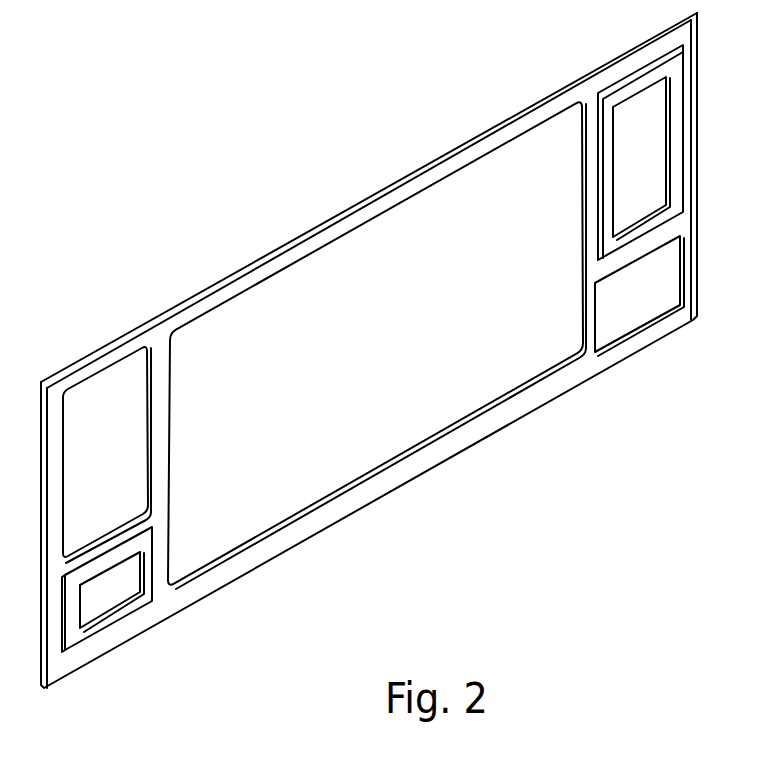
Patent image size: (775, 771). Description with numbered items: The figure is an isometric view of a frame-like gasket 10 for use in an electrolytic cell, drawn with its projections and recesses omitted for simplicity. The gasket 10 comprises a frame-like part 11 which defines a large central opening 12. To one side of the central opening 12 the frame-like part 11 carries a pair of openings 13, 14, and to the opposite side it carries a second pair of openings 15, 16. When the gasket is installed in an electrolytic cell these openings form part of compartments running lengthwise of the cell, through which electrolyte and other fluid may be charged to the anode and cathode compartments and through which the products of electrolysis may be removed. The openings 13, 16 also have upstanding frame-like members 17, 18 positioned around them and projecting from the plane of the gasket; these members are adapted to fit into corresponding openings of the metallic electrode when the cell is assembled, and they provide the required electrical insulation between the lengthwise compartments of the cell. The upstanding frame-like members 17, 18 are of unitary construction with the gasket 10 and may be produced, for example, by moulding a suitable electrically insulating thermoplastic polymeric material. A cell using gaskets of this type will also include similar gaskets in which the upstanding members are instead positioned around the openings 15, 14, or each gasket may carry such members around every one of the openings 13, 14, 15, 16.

The gasket 10 is at (312, 226).
The frame-like part 11 is at (442, 162).
The central opening 12 is at (238, 312).
The opening 13 is at (117, 595).
The opening 14 is at (125, 376).
The opening 15 is at (670, 278).
The opening 16 is at (642, 198).
The upstanding frame-like member 17 is at (78, 642).
The upstanding frame-like member 18 is at (680, 160).